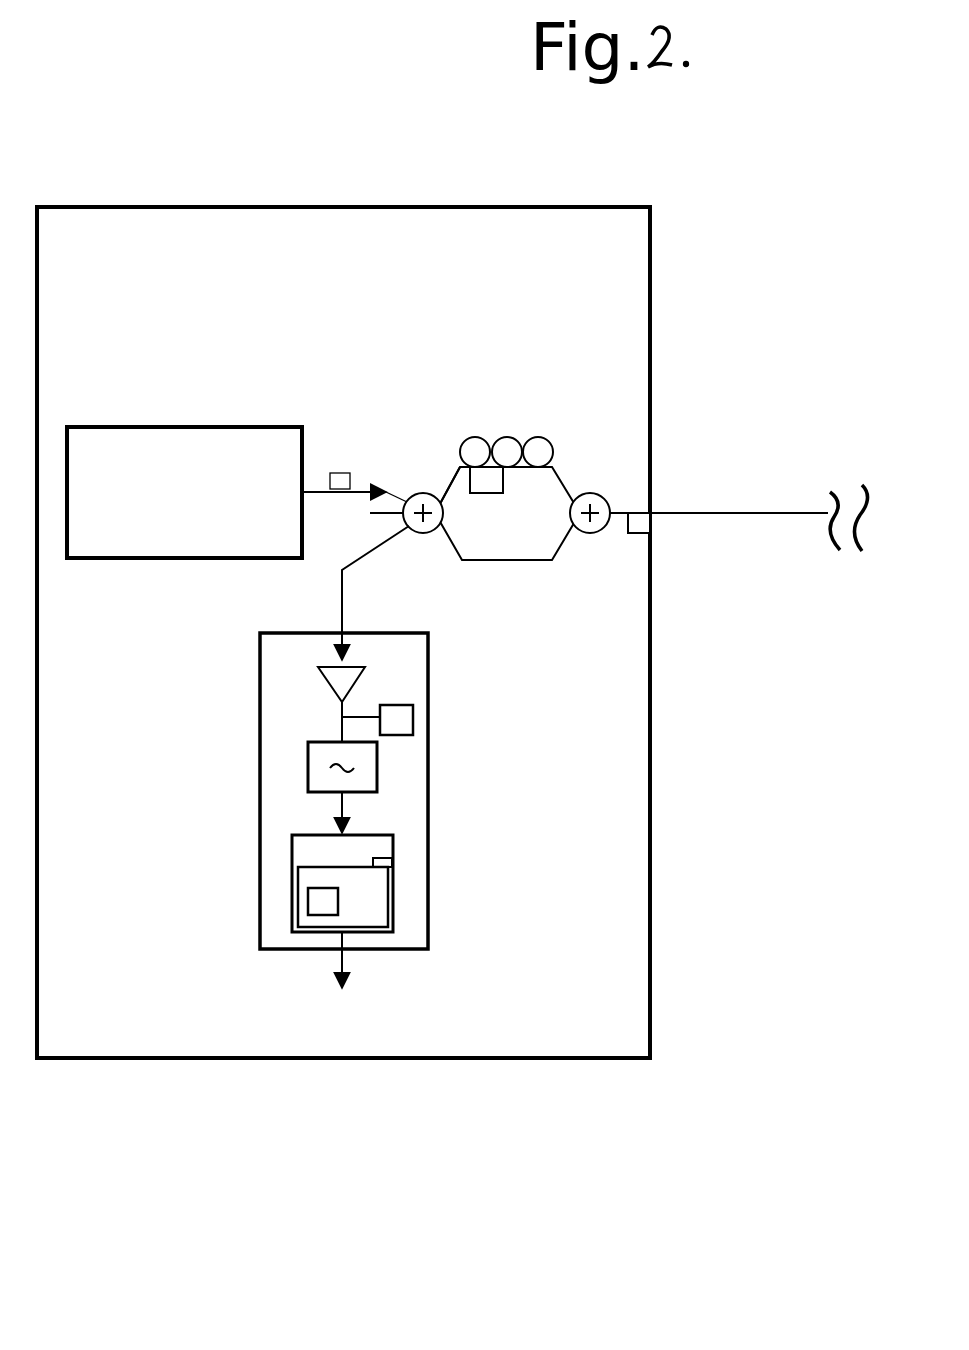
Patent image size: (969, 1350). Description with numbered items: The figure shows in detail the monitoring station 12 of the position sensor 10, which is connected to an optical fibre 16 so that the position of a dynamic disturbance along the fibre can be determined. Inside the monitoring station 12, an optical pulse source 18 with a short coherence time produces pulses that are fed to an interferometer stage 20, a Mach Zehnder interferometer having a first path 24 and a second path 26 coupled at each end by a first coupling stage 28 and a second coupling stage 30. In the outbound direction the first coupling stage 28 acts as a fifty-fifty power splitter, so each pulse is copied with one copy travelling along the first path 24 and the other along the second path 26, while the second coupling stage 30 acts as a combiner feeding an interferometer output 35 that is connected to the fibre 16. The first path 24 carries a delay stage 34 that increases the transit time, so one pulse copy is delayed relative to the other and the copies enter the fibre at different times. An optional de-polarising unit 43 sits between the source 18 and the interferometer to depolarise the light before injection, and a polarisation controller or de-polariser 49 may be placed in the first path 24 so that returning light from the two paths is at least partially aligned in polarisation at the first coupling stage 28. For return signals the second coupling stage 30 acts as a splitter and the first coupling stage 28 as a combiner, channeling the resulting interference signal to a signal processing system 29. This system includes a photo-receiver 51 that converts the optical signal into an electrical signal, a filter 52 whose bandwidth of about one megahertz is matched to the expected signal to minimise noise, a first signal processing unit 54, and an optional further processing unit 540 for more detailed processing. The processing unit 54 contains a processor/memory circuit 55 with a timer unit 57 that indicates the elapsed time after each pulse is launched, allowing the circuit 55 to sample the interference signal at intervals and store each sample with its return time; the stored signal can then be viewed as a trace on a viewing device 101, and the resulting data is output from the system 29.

The position sensor 10 is at (762, 1075).
The monitoring station 12 is at (392, 1043).
The optical fibre 16 is at (730, 510).
The optical pulse source 18 is at (217, 460).
The interferometer stage 20 is at (579, 586).
The first path 24 is at (456, 472).
The second path 26 is at (565, 549).
The first coupling stage 28 is at (415, 533).
The signal processing system 29 is at (351, 836).
The second coupling stage 30 is at (602, 495).
The delay stage 34 is at (540, 440).
The interferometer output 35 is at (650, 522).
The de-polarising unit 43 is at (345, 473).
The polarisation controller or de-polariser 49 is at (485, 487).
The photo-receiver 51 is at (335, 680).
The filter 52 is at (318, 773).
The first signal processing unit 54 is at (378, 838).
The processor/memory circuit 55 is at (380, 915).
The timer unit 57 is at (317, 902).
The viewing device 101 is at (393, 862).
The further processing unit 540 is at (413, 720).